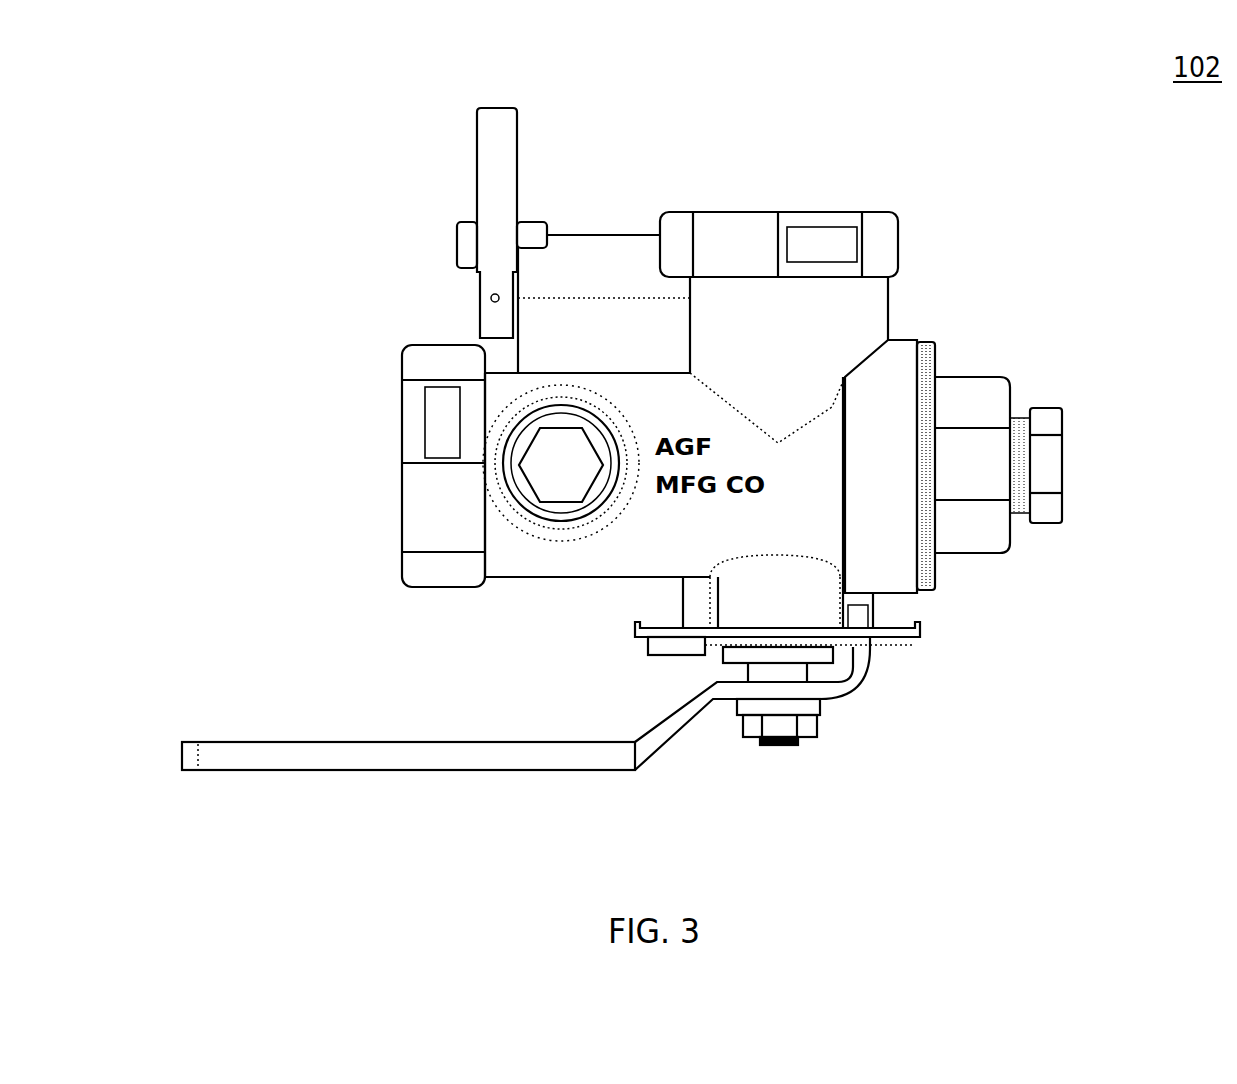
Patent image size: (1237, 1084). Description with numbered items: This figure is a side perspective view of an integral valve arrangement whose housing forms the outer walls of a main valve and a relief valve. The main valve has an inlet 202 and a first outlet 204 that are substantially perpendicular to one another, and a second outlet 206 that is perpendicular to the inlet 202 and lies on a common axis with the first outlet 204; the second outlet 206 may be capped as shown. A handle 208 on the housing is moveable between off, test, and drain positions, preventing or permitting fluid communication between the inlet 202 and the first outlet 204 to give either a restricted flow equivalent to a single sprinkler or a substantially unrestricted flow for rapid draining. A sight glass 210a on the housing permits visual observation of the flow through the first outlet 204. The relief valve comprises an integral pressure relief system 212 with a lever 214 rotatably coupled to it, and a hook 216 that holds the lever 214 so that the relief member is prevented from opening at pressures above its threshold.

The inlet 202 is at (828, 196).
The first outlet 204 is at (378, 447).
The second outlet 206 is at (968, 382).
The handle 208 is at (405, 770).
The sight glass 210a is at (568, 488).
The pressure relief system 212 is at (600, 218).
The lever 214 is at (477, 160).
The hook 216 is at (457, 243).